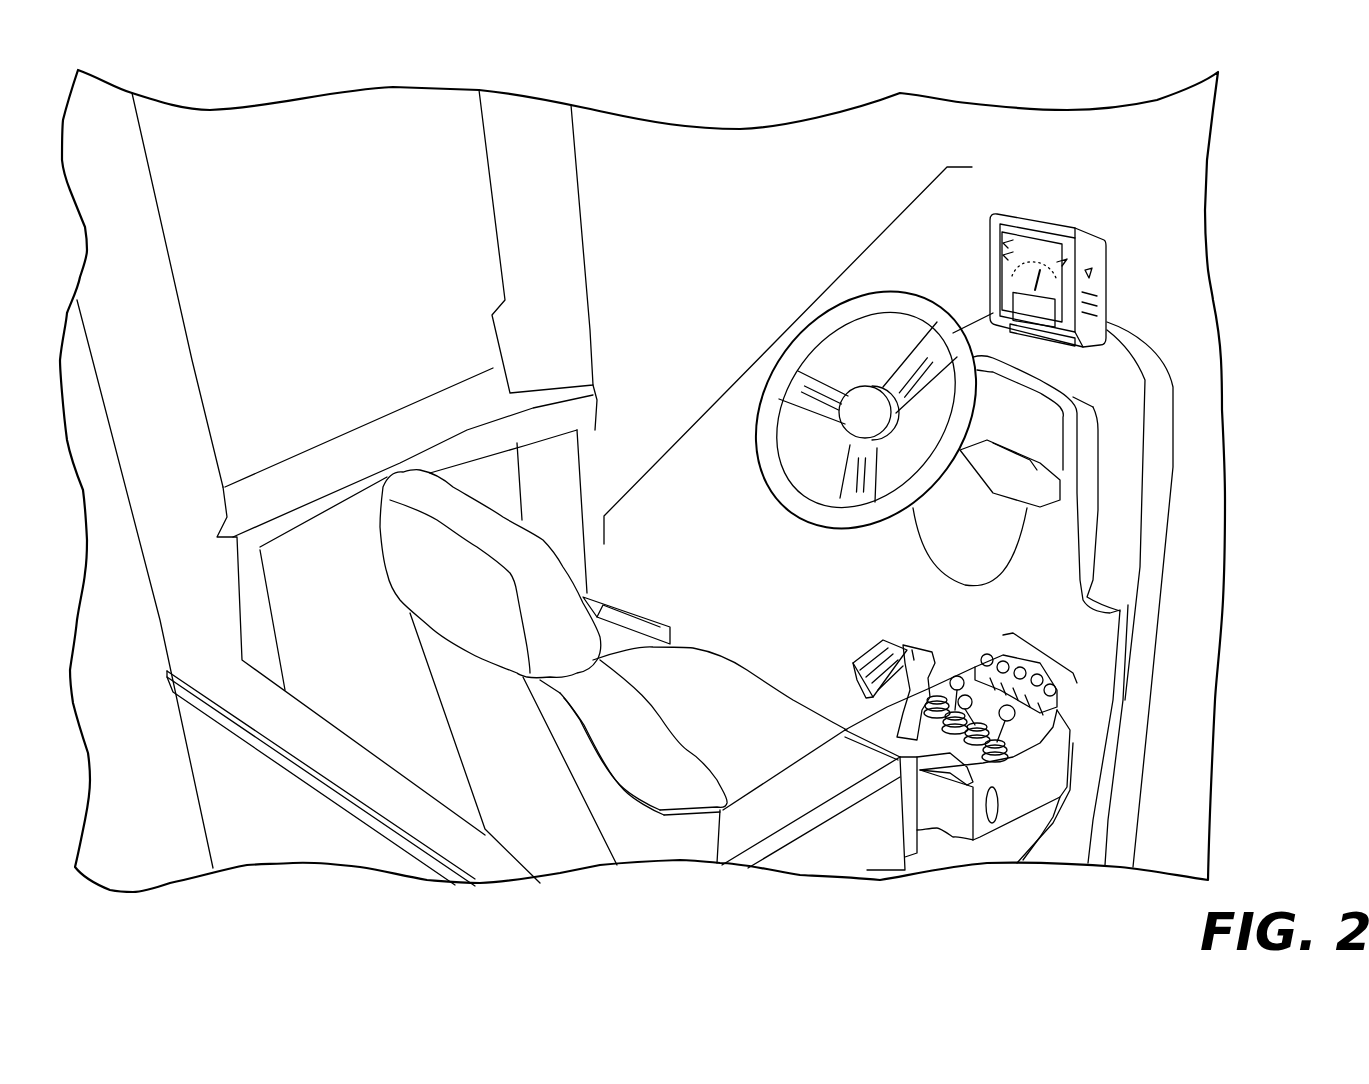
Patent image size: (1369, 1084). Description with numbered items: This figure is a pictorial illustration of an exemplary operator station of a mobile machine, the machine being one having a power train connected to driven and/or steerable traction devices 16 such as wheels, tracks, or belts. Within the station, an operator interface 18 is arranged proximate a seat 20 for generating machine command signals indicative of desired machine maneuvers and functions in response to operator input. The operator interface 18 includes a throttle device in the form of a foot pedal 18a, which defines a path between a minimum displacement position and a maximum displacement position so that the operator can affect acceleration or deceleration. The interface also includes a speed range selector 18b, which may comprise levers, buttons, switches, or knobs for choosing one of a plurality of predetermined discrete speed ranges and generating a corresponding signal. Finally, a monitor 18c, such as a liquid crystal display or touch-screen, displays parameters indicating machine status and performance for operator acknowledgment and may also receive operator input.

The traction devices 16 is at (1177, 151).
The operator interface 18 is at (777, 345).
The foot pedal 18a is at (867, 660).
The speed range selector 18b is at (1057, 660).
The monitor 18c is at (1067, 227).
The seat 20 is at (531, 540).